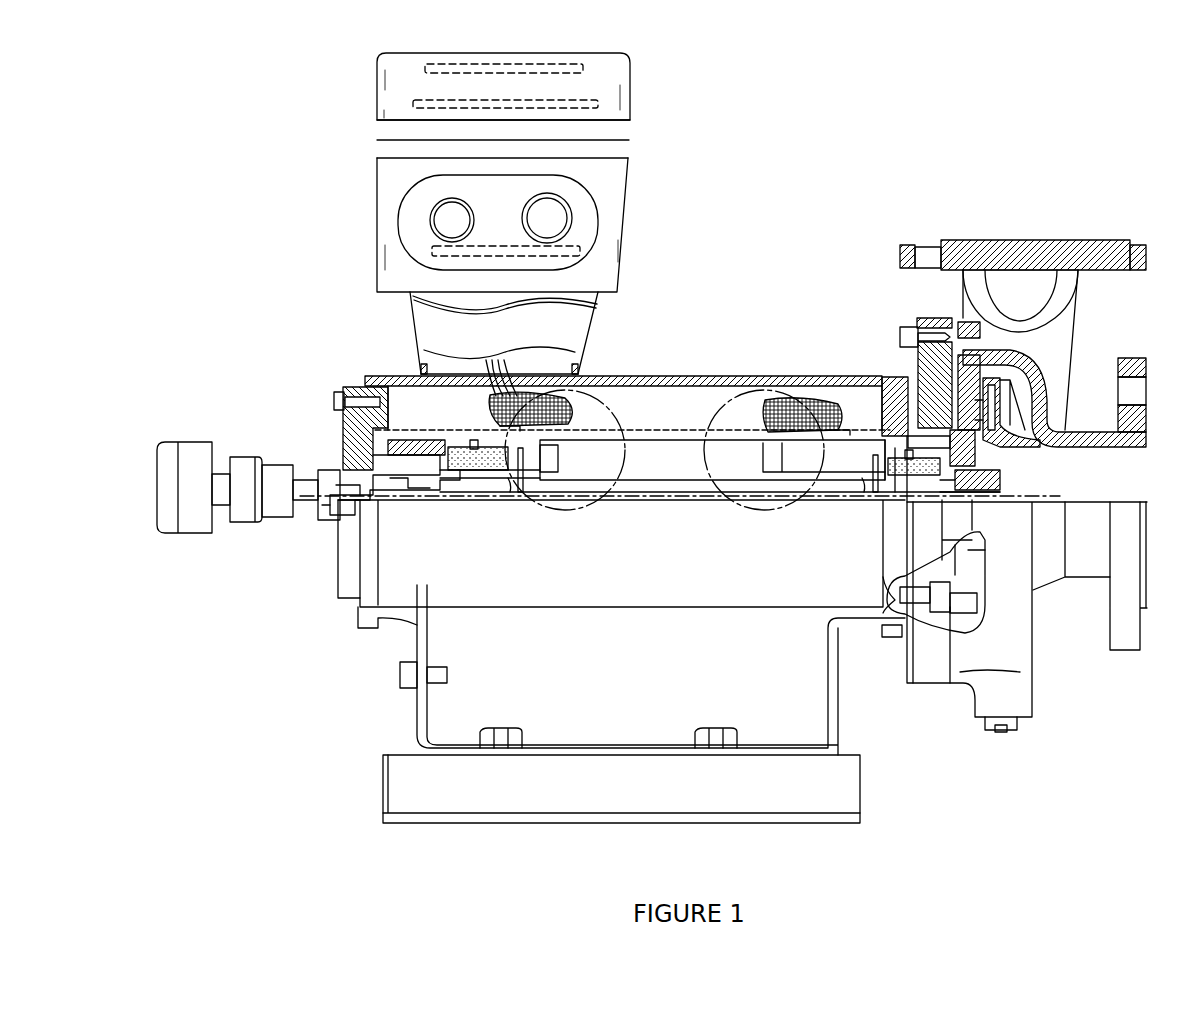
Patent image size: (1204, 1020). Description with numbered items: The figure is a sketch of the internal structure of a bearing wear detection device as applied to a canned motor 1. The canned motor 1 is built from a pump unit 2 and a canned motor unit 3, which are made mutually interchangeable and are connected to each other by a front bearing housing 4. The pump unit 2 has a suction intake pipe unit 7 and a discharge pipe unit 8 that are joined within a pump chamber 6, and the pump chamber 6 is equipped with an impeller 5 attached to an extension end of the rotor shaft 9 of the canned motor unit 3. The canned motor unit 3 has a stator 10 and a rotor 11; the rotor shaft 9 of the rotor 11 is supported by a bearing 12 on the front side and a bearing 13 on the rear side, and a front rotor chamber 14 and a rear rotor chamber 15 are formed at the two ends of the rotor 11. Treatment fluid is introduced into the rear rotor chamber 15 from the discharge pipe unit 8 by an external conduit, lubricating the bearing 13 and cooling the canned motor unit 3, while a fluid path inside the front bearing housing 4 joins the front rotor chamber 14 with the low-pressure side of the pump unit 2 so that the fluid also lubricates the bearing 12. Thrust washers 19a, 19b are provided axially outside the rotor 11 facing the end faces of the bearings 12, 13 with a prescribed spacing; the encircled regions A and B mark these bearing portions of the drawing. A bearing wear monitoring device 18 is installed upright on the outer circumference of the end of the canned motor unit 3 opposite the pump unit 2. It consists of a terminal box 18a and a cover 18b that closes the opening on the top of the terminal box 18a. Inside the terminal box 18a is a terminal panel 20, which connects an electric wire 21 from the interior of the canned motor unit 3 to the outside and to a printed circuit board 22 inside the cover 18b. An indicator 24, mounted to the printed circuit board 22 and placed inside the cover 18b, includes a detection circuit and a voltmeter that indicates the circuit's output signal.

The canned motor 1 is at (840, 200).
The pump unit 2 is at (1132, 236).
The canned motor unit 3 is at (318, 600).
The front bearing housing 4 is at (925, 318).
The impeller 5 is at (1010, 457).
The pump chamber 6 is at (1023, 353).
The suction intake pipe unit 7 is at (1148, 558).
The discharge pipe unit 8 is at (960, 240).
The rotor shaft 9 is at (690, 492).
The stator 10 is at (625, 393).
The rotor 11 is at (690, 455).
The bearing 12 is at (905, 375).
The bearing 13 is at (345, 430).
The front rotor chamber 14 is at (828, 470).
The rear rotor chamber 15 is at (548, 488).
The bearing wear monitoring device 18 is at (372, 160).
The terminal box 18a is at (378, 230).
The cover 18b is at (377, 97).
The thrust washer 19a is at (865, 480).
The thrust washer 19b is at (520, 480).
The terminal panel 20 is at (580, 250).
The electric wire 21 is at (487, 357).
The printed circuit board 22 is at (598, 104).
The indicator 24 is at (583, 68).
The bearing portion A is at (756, 392).
The bearing portion B is at (604, 510).